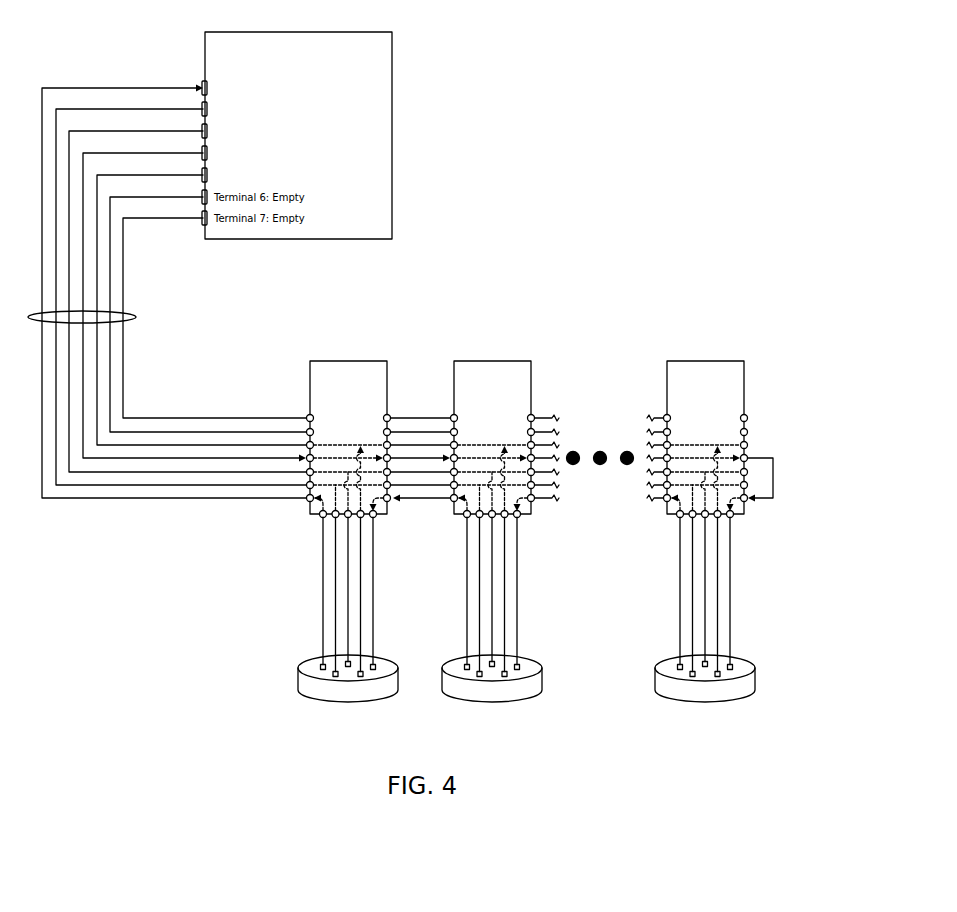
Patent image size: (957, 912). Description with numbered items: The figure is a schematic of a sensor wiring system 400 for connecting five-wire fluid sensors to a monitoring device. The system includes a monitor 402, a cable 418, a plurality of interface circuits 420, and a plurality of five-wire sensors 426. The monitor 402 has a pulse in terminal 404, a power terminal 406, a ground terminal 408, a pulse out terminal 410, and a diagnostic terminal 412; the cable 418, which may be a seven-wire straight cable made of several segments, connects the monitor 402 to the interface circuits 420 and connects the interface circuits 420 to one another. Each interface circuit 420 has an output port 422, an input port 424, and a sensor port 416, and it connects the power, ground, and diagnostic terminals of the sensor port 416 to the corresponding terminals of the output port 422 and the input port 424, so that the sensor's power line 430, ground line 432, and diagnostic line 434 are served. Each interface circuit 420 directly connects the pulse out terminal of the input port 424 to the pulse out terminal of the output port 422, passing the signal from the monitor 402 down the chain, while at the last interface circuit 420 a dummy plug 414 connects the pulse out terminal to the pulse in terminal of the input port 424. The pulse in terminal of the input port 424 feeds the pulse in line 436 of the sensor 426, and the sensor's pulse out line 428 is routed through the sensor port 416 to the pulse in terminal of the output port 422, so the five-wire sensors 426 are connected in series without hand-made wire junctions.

The sensor wiring system 400 is at (823, 41).
The monitor 402 is at (298, 135).
The pulse in terminal 404 is at (271, 88).
The power terminal 406 is at (267, 109).
The ground terminal 408 is at (270, 131).
The pulse out terminal 410 is at (275, 153).
The diagnostic terminal 412 is at (278, 175).
The dummy plug 414 is at (775, 466).
The sensor port 416 is at (312, 520).
The cable 418 is at (137, 317).
The interface circuit 420 is at (521, 437).
The output port 422 is at (660, 410).
The input port 424 is at (394, 515).
The five-wire sensor 426 is at (350, 704).
The pulse out line 428 is at (323, 565).
The power line 430 is at (336, 582).
The ground line 432 is at (348, 598).
The diagnostic line 434 is at (360, 616).
The pulse in line 436 is at (373, 633).